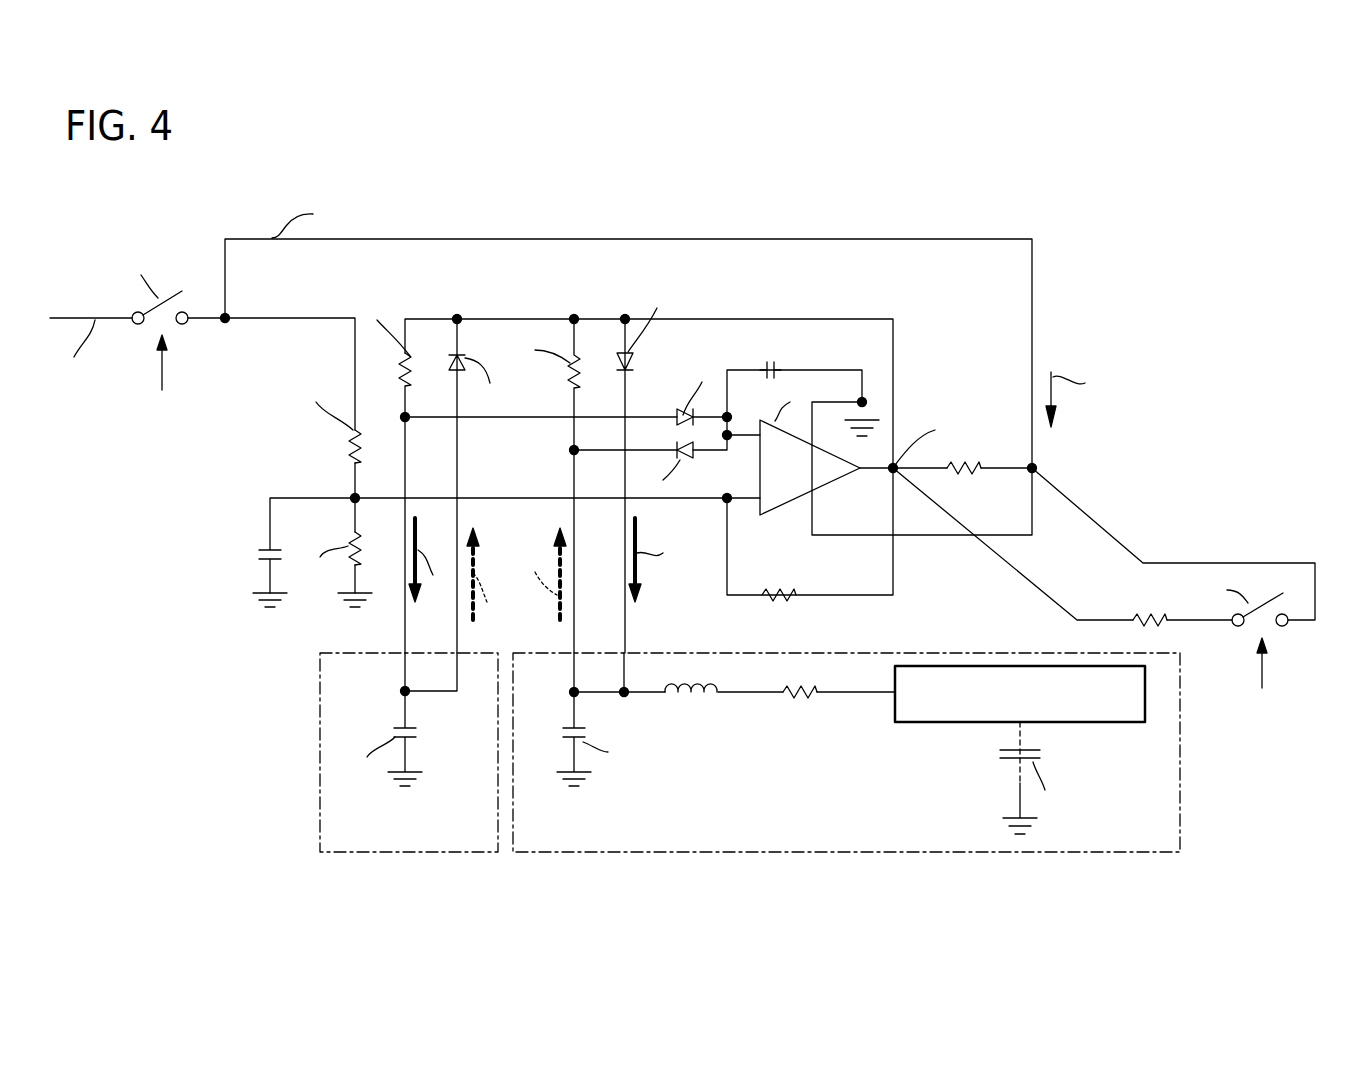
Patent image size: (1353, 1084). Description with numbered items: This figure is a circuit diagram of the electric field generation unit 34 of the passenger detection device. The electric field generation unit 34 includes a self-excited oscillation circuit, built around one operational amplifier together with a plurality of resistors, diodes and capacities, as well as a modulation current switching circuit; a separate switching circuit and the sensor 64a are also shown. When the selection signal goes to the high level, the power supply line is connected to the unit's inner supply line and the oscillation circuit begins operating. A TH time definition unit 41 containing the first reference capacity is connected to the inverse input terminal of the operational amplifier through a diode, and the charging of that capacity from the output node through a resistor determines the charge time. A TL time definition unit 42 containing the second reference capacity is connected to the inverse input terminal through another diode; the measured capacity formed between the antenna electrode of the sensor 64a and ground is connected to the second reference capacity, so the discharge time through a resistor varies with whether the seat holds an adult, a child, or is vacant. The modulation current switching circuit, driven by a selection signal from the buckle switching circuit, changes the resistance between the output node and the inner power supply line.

The electric field generation unit 34 is at (908, 218).
The TH time definition unit 41 is at (320, 790).
The TL time definition unit 42 is at (1180, 815).
The sensor 64a is at (920, 723).